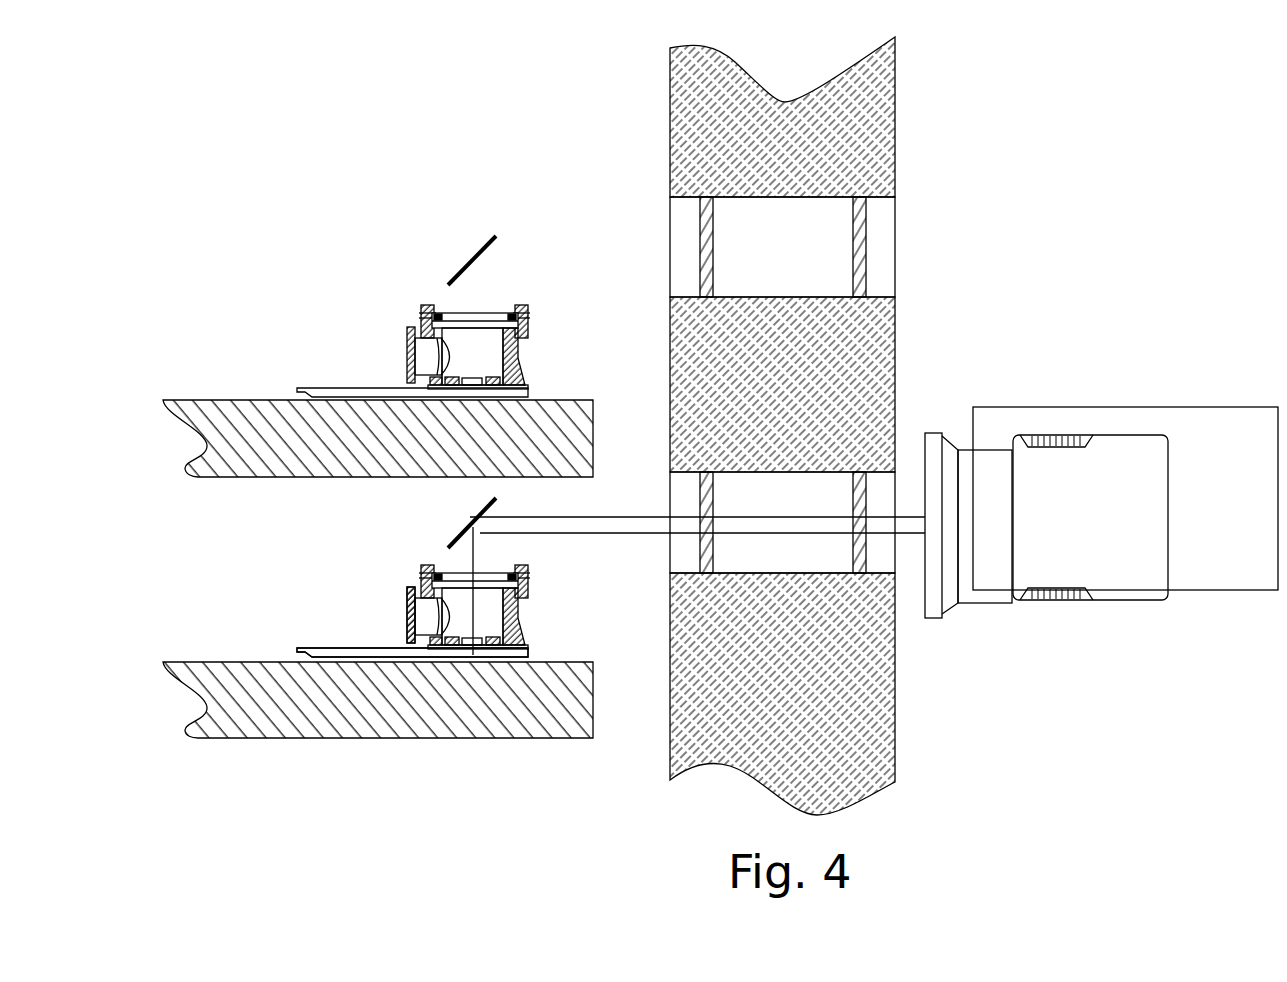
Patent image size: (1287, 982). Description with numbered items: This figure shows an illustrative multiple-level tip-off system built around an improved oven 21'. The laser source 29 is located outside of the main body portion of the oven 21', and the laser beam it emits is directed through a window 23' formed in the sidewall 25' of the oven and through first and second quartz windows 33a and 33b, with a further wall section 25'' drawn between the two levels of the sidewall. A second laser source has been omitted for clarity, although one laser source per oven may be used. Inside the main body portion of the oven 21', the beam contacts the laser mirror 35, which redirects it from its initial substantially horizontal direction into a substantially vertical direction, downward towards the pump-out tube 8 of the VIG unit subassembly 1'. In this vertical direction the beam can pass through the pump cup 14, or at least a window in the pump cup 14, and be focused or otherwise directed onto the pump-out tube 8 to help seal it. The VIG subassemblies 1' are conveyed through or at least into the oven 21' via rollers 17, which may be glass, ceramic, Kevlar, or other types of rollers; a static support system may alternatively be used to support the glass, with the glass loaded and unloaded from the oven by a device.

The oven 21' is at (383, 215).
The sidewall 25' is at (819, 426).
The wall section 25'' is at (824, 384).
The window 23' is at (816, 419).
The first quartz window 33a is at (862, 270).
The second quartz window 33b is at (705, 232).
The laser source 29 is at (1203, 420).
The rollers 17 is at (232, 415).
The laser mirror 35 is at (468, 522).
The pump cup 14 is at (410, 617).
The pump-out tube 8 is at (475, 643).
The VIG unit subassembly 1' is at (448, 725).